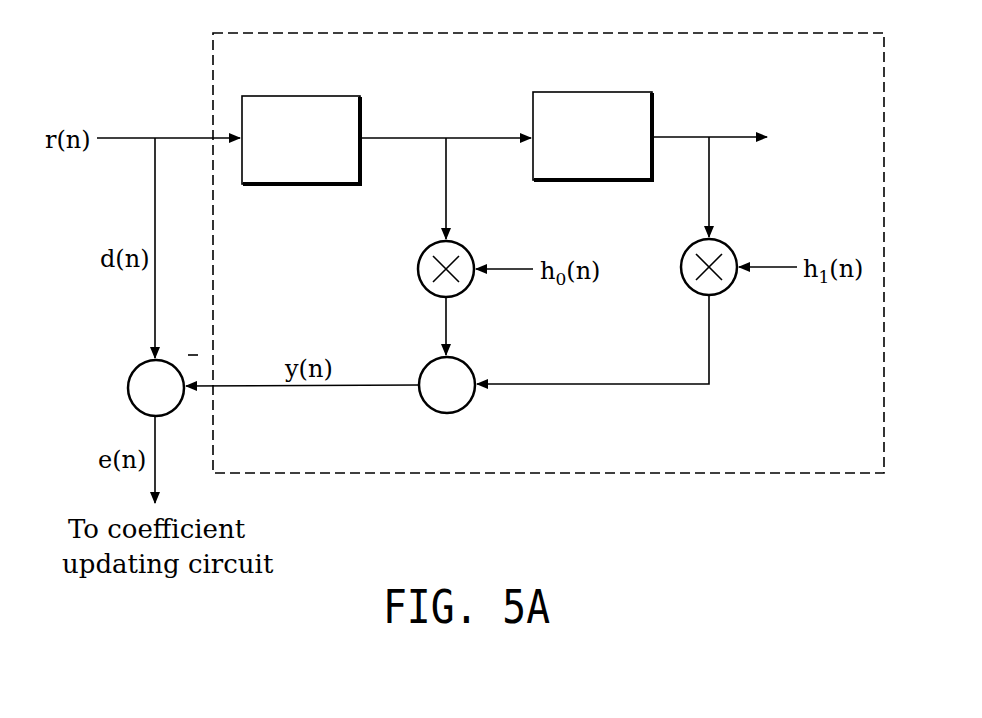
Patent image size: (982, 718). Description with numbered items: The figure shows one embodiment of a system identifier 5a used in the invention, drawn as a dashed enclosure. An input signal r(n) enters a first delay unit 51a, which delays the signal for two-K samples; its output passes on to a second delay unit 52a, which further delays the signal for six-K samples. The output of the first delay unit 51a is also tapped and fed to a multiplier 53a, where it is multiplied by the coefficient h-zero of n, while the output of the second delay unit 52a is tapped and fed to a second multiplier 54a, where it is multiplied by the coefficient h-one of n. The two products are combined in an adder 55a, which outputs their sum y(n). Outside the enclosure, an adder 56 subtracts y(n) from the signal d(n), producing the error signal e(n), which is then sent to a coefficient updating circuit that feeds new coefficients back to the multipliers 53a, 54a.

The system identifier 5a is at (767, 33).
The 2K delay unit 51a is at (330, 96).
The 6K delay unit 52a is at (620, 92).
The multiplier 53a is at (466, 249).
The multiplier 54a is at (729, 248).
The adder 55a is at (467, 405).
The adder 56 is at (128, 388).